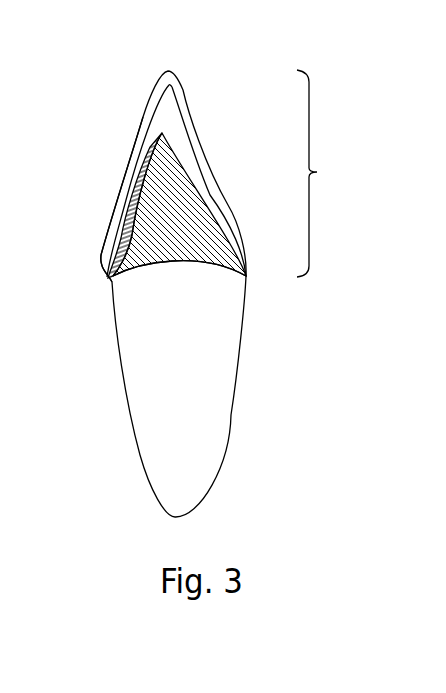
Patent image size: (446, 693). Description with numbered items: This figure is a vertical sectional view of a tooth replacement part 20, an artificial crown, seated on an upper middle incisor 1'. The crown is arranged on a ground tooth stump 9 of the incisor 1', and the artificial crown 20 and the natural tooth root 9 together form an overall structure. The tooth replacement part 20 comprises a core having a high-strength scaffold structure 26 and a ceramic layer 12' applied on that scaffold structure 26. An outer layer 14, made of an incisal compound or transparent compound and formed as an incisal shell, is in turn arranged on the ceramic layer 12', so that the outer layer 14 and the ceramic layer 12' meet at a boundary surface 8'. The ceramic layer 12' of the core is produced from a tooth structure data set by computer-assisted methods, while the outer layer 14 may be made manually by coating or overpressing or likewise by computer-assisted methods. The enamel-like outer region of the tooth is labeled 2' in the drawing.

The upper middle incisor 1' is at (205, 294).
The enamel layer 2' is at (187, 147).
The boundary surface 8' is at (184, 185).
The ground tooth stump 9 is at (182, 247).
The ceramic layer 12' is at (64, 272).
The outer layer 14 is at (125, 173).
The tooth replacement part 20 is at (325, 173).
The high-strength scaffold structure 26 is at (187, 190).